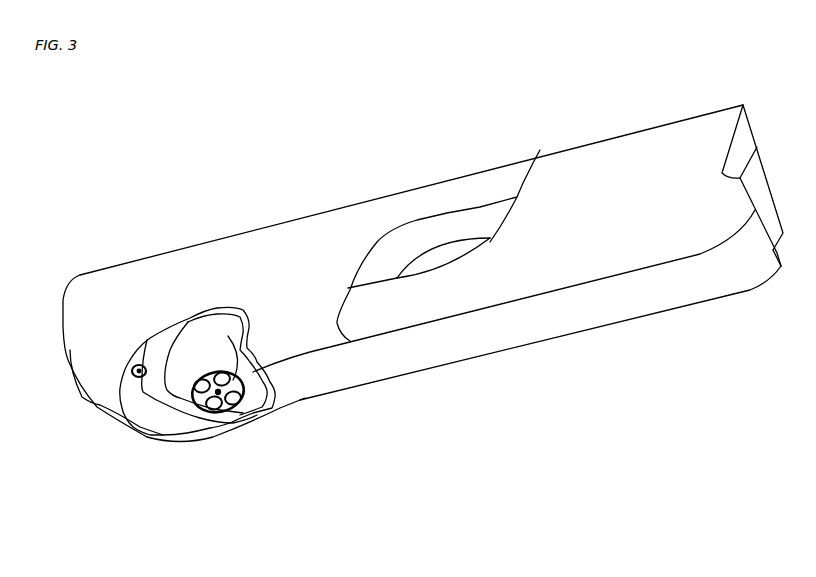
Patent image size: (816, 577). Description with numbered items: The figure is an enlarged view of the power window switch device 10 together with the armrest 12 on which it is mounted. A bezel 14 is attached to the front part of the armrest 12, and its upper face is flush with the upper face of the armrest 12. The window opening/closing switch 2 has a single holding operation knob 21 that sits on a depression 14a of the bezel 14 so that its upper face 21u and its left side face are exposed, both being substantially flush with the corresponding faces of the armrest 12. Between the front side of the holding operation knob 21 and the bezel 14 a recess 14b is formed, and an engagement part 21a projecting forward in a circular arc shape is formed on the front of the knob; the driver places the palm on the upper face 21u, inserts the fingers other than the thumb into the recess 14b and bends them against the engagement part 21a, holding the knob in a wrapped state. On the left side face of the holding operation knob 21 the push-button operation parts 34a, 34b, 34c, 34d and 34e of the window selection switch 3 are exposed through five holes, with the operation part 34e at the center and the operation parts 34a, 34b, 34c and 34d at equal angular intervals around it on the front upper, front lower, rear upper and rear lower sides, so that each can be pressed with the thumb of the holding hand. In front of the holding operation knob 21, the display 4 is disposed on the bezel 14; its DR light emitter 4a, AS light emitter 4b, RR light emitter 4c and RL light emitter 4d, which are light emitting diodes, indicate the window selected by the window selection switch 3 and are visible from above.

The power window switch device 10 is at (249, 464).
The armrest 12 is at (652, 125).
The bezel 14 is at (150, 413).
The depression 14a is at (197, 422).
The recess 14b is at (145, 412).
The window opening/closing switch 2 is at (168, 425).
The window selection switch 3 is at (275, 409).
The holding operation knob 21 is at (187, 316).
The engagement part 21a is at (170, 365).
The upper face 21u is at (213, 340).
The display 4 is at (125, 368).
The DR light emitter 4a is at (129, 362).
The AS light emitter 4b is at (128, 373).
The RR light emitter 4c is at (136, 356).
The RL light emitter 4d is at (131, 383).
The operation part 34a is at (228, 336).
The operation part 34b is at (218, 428).
The operation part 34c is at (248, 353).
The operation part 34d is at (263, 418).
The operation part 34e is at (245, 390).